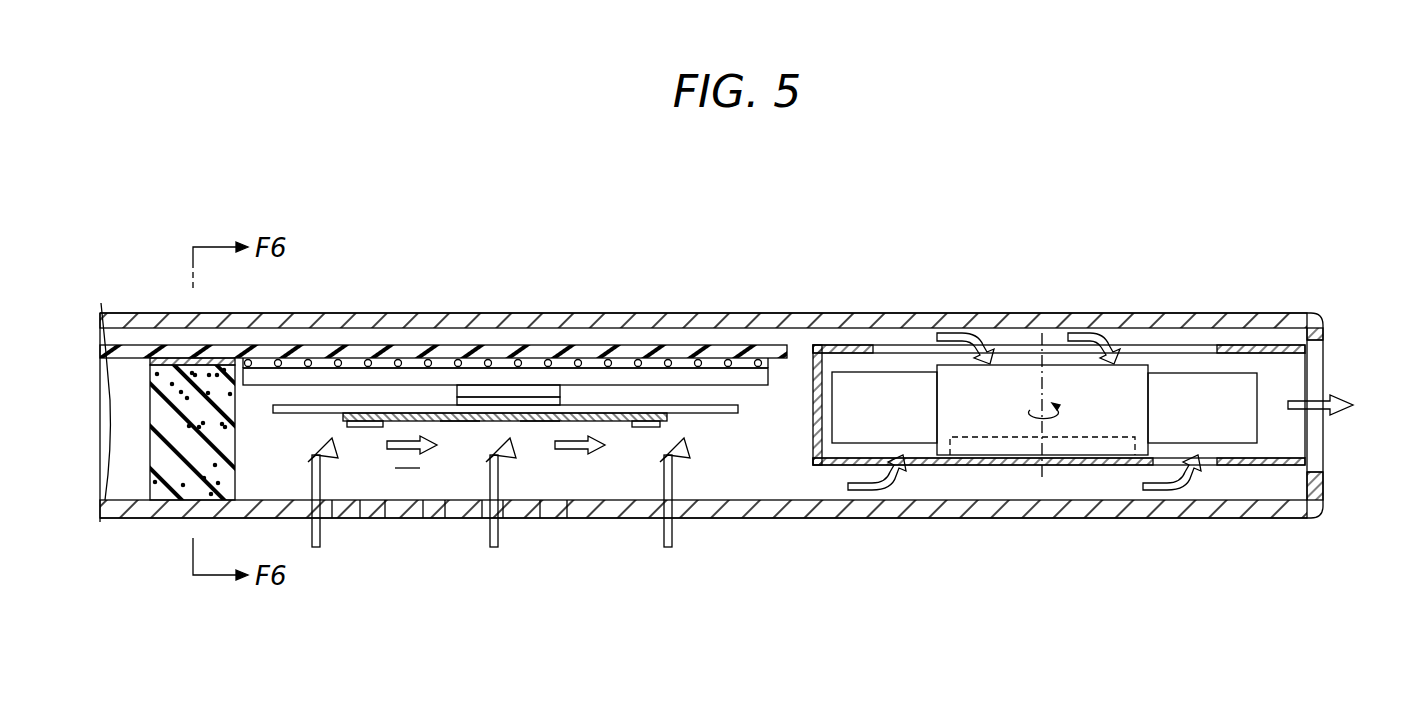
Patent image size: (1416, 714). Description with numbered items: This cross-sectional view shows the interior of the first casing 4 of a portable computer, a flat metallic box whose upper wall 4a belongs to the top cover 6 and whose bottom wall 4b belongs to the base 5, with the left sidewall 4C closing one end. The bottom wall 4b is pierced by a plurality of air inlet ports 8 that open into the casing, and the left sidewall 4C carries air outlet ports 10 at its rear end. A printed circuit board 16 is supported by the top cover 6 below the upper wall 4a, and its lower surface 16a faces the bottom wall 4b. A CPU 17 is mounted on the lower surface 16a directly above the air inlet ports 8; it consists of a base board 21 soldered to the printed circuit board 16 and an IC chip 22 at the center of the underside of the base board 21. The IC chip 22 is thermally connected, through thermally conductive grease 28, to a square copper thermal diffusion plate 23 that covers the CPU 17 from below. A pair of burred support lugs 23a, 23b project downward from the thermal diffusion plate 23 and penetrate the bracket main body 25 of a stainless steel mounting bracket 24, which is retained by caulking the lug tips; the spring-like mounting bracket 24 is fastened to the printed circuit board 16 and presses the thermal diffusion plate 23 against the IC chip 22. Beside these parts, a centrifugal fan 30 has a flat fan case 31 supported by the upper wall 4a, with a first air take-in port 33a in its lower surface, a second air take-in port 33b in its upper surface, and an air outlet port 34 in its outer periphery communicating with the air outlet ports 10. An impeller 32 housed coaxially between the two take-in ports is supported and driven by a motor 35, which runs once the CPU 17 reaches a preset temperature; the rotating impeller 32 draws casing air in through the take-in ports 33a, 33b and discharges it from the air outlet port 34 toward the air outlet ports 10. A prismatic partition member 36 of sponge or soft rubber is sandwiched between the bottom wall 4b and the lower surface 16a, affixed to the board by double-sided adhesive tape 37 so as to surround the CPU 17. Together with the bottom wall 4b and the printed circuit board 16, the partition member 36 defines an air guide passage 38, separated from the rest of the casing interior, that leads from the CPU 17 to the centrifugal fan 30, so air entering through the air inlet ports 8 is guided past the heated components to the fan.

The first casing 4 is at (172, 250).
The upper wall 4a is at (770, 320).
The bottom wall 4b is at (712, 520).
The left sidewall 4C is at (1318, 452).
The base 5 is at (100, 490).
The top cover 6 is at (155, 345).
The air inlet ports 8 is at (332, 519).
The air outlet ports 10 is at (1318, 380).
The printed circuit board 16 is at (641, 380).
The lower surface 16a is at (340, 378).
The CPU 17 is at (504, 303).
The base board 21 is at (467, 383).
The IC chip 22 is at (513, 396).
The thermal diffusion plate 23 is at (725, 414).
The support lug 23a is at (370, 428).
The support lug 23b is at (646, 428).
The mounting bracket 24 is at (463, 423).
The bracket main body 25 is at (587, 412).
The grease 28 is at (530, 422).
The centrifugal fan 30 is at (1258, 333).
The fan case 31 is at (1095, 466).
The impeller 32 is at (1178, 388).
The first air take-in port 33a is at (908, 465).
The second air take-in port 33b is at (906, 353).
The air outlet port 34 is at (1283, 447).
The motor 35 is at (1018, 443).
The partition member 36 is at (178, 495).
The double-sided adhesive tape 37 is at (205, 358).
The air guide passage 38 is at (407, 468).